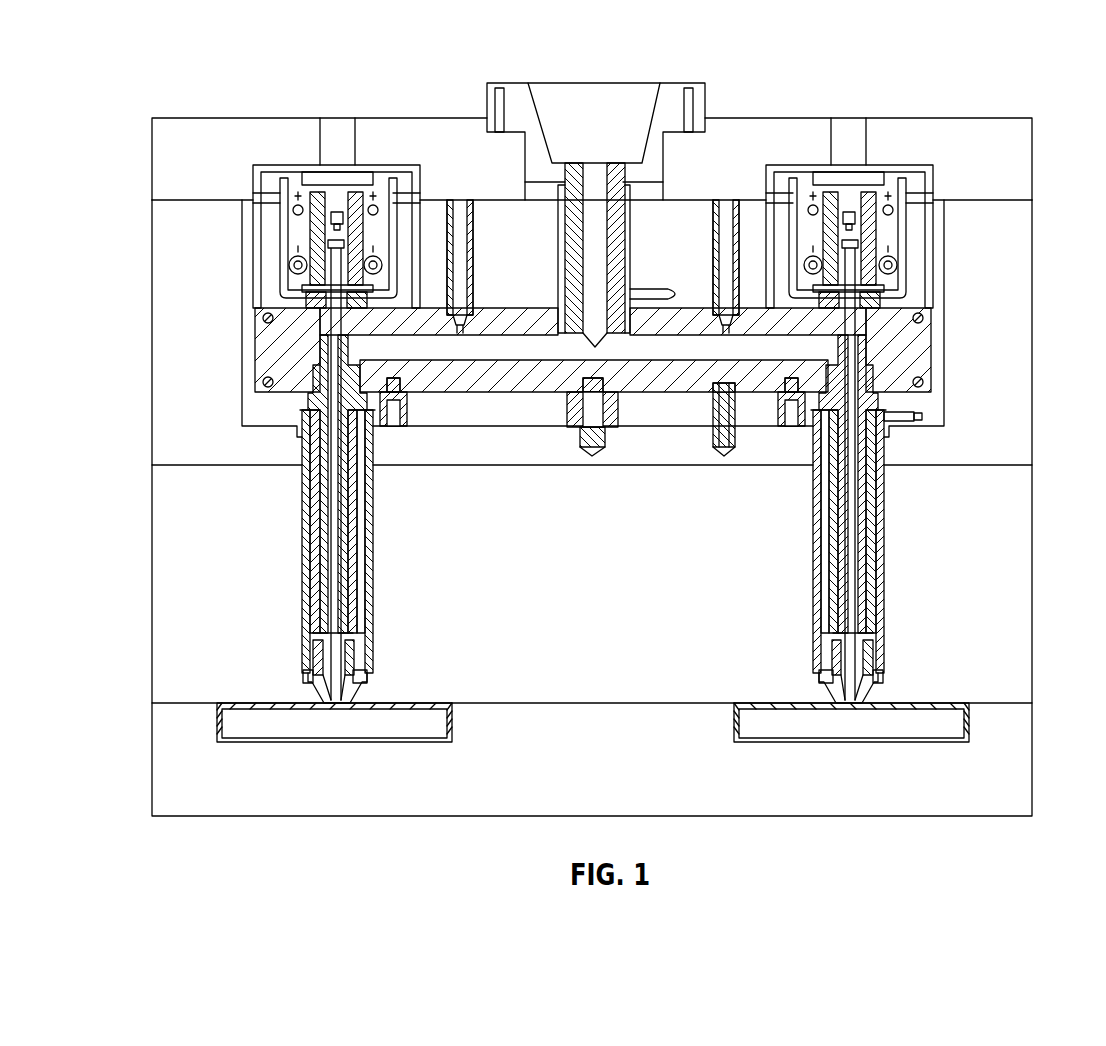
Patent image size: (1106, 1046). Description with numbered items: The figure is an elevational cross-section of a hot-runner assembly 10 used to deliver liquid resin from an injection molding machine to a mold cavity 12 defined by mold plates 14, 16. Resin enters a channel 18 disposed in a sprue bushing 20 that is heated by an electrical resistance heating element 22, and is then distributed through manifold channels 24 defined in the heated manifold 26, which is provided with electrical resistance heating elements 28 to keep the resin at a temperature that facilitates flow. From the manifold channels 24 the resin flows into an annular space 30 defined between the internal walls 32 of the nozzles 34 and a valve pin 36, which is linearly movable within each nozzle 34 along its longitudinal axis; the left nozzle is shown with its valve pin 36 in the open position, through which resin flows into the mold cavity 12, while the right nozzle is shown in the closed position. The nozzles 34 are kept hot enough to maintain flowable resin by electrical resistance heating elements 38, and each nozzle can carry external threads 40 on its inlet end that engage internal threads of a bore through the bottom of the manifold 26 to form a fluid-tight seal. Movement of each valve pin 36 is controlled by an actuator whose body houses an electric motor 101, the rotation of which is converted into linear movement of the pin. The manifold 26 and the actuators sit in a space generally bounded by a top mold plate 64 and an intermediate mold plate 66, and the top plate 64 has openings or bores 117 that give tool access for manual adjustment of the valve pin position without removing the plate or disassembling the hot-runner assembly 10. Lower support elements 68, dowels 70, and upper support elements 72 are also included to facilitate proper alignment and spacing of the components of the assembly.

The hot-runner assembly 10 is at (962, 67).
The mold cavity 12 is at (333, 723).
The mold plate 14 is at (1015, 610).
The mold plate 16 is at (1015, 784).
The channel 18 is at (594, 178).
The sprue bushing 20 is at (615, 198).
The electrical resistance heating element 22 is at (627, 258).
The manifold channels 24 is at (690, 347).
The manifold 26 is at (903, 360).
The electrical resistance heating elements 28 is at (270, 390).
The annular space 30 is at (345, 508).
The internal walls 32 is at (352, 585).
The nozzles 34 is at (302, 471).
The valve pin 36 is at (333, 558).
The electrical resistance heating elements 38 is at (362, 627).
The external threads 40 is at (398, 400).
The top mold plate 64 is at (1035, 174).
The intermediate mold plate 66 is at (1015, 415).
The lower support elements 68 is at (790, 430).
The dowels 70 is at (722, 448).
The upper support elements 72 is at (472, 260).
The electric motor 101 is at (322, 236).
The openings or bores 117 is at (337, 130).